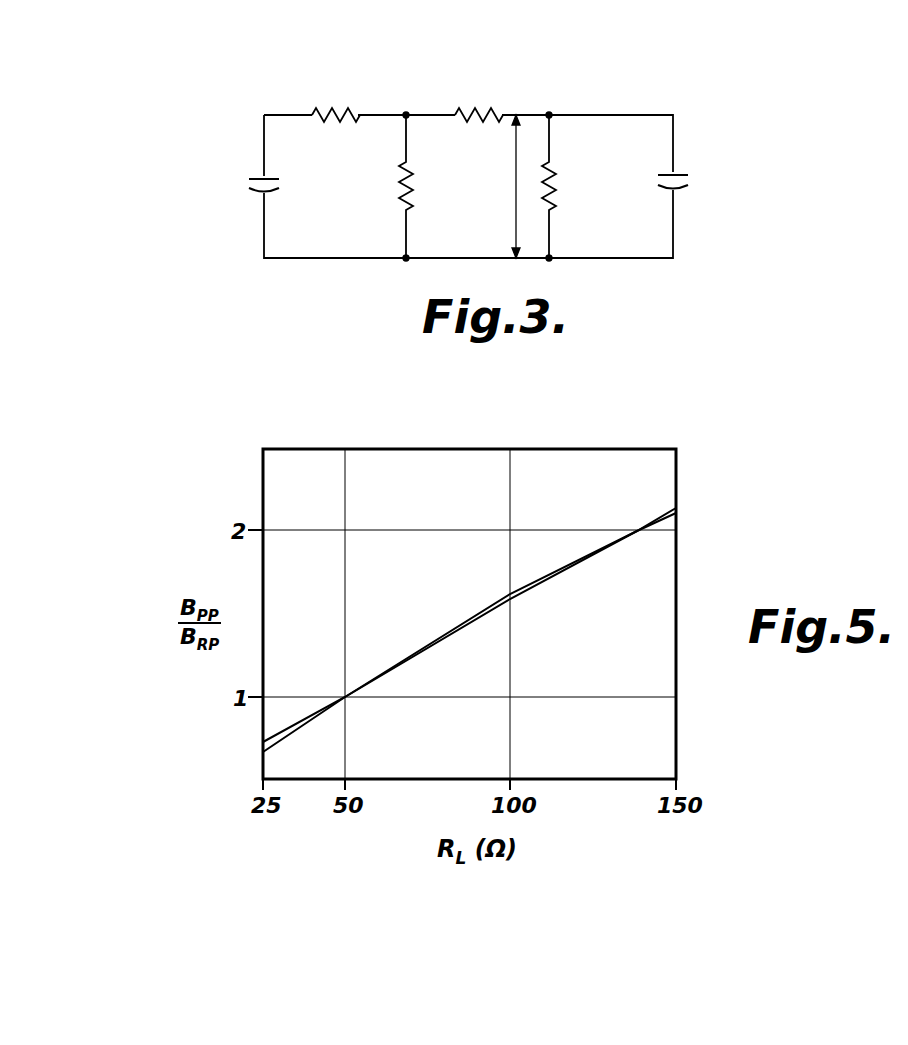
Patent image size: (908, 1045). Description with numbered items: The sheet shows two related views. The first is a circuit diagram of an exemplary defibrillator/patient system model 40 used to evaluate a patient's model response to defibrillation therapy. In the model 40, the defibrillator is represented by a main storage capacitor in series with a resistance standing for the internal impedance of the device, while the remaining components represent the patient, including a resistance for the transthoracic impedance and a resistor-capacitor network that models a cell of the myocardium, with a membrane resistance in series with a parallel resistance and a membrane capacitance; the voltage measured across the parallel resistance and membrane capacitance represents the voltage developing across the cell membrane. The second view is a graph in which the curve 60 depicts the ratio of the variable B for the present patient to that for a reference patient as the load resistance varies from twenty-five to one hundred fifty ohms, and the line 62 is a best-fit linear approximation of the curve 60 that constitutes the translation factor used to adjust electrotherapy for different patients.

In FIG. 3, the defibrillator/patient system model 40 is at (602, 92).
In FIG. 5, the curve 60 is at (452, 629).
In FIG. 5, the line 62 is at (470, 626).